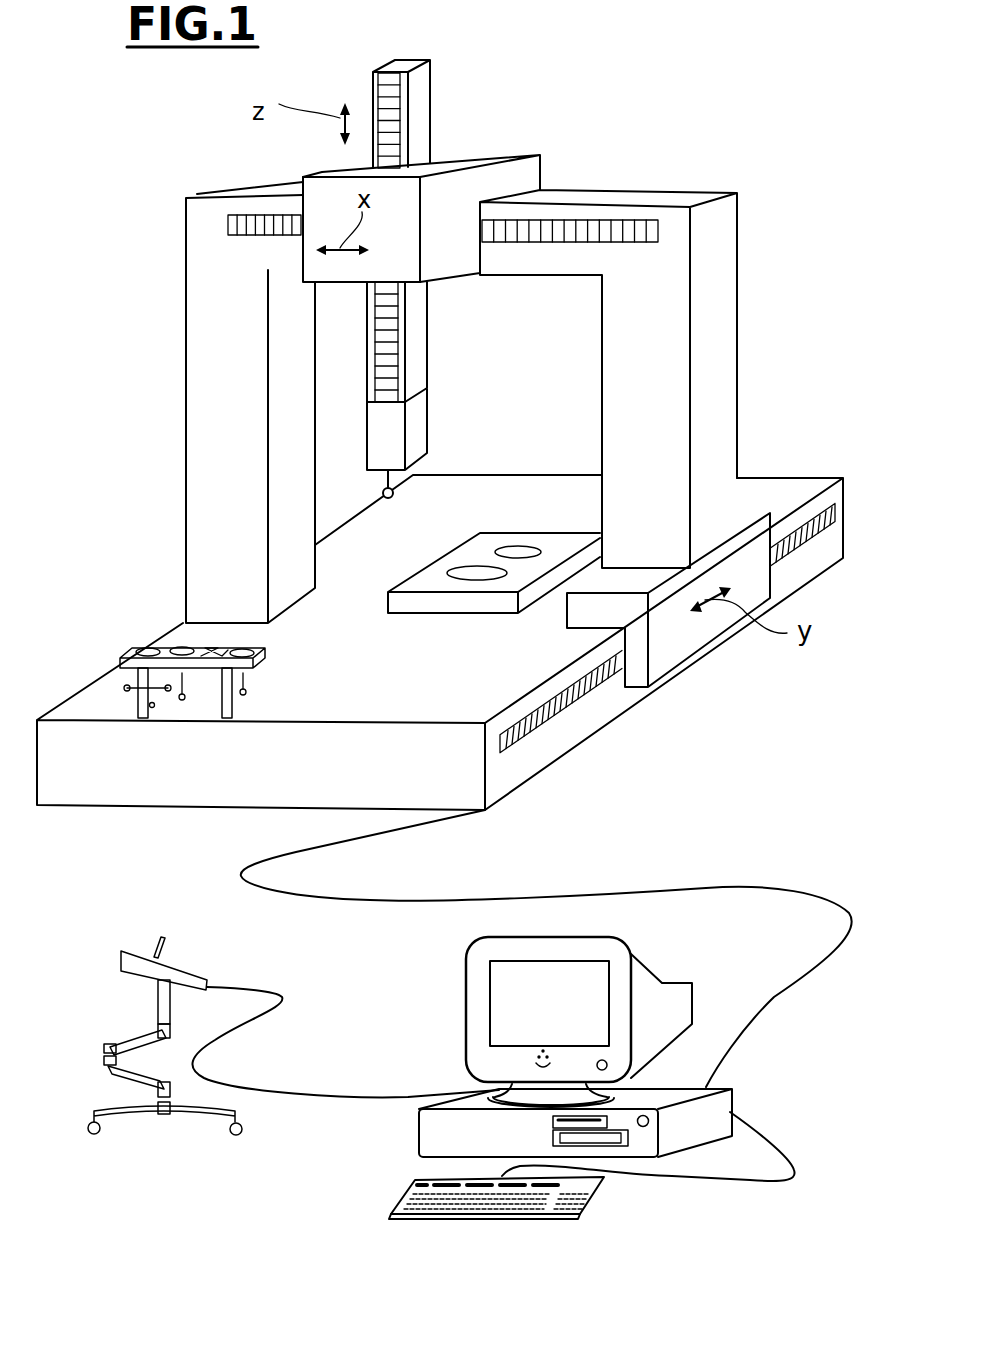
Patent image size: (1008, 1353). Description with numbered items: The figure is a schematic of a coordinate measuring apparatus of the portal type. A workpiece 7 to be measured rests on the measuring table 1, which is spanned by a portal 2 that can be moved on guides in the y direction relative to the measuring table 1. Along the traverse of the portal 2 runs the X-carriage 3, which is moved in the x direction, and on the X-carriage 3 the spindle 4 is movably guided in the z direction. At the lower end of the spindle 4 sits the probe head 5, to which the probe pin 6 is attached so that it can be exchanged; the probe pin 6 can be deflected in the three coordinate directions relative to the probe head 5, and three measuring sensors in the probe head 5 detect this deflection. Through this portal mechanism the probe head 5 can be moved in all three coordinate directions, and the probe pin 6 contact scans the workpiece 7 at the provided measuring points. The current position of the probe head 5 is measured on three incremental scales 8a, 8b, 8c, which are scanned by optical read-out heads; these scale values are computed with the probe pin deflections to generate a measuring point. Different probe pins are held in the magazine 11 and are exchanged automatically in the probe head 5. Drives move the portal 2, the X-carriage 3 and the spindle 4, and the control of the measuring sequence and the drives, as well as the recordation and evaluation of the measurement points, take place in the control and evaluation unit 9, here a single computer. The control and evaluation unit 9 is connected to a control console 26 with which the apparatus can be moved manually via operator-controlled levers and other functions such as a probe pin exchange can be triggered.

The measuring table 1 is at (770, 488).
The portal 2 is at (713, 312).
The X-carriage 3 is at (467, 152).
The spindle 4 is at (418, 85).
The probe head 5 is at (413, 425).
The probe pin 6 is at (393, 476).
The workpiece 7 is at (467, 603).
The incremental scale 8a is at (635, 220).
The incremental scale 8b is at (836, 495).
The incremental scale 8c is at (398, 337).
The control and evaluation unit 9 is at (430, 1041).
The magazine 11 is at (132, 653).
The control console 26 is at (141, 1121).